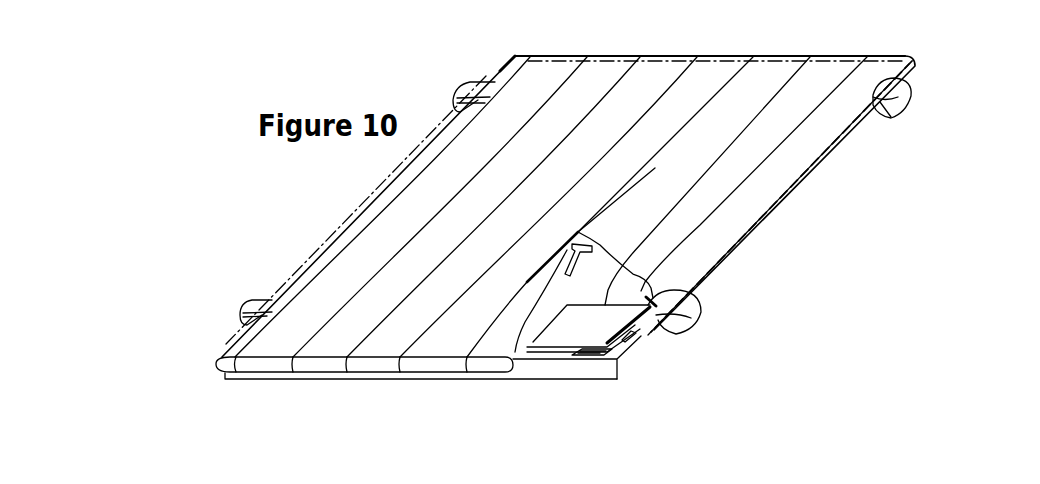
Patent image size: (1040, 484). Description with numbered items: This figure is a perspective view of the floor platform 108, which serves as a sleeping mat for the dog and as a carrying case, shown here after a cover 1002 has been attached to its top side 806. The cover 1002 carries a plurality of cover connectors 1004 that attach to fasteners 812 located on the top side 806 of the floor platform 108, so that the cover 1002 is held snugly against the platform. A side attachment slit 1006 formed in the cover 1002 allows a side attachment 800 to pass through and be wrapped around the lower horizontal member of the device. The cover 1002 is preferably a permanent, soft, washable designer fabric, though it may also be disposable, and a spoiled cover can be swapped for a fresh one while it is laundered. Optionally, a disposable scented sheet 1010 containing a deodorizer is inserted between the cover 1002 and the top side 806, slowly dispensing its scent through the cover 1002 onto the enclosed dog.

The floor platform 108 is at (318, 232).
The side attachment 800 is at (472, 82).
The top side 806 is at (532, 352).
The fasteners 812 is at (637, 338).
The cover 1002 is at (673, 150).
The cover connectors 1004 is at (592, 243).
The side attachment slit 1006 is at (494, 80).
The scented sheet 1010 is at (587, 334).